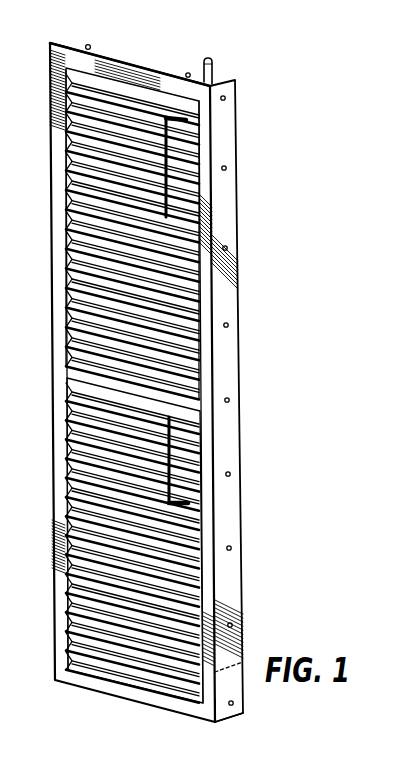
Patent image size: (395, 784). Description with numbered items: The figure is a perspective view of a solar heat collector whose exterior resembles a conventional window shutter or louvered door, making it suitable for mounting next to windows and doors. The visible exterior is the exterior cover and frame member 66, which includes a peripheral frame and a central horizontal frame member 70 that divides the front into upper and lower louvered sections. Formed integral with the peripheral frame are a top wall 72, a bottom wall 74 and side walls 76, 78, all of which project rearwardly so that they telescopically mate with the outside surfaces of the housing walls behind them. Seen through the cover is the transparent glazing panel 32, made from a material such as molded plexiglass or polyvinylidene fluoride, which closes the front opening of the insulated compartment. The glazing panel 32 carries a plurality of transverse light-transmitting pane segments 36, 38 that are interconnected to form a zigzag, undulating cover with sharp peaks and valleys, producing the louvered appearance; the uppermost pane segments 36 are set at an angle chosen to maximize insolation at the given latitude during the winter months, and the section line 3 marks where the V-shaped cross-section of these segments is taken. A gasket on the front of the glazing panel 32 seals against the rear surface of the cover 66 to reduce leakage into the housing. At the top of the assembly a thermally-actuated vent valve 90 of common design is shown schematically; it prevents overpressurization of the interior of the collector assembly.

The side wall 76 is at (62, 42).
The top wall 72 is at (106, 58).
The exterior cover and frame member 66 is at (147, 63).
The thermally-actuated vent valve 90 is at (213, 66).
The section line 3- 3 is at (186, 120).
The light-transmitting pane segment 36 is at (190, 240).
The light-transmitting pane segment 38 is at (218, 260).
The glazing panel 32 is at (168, 234).
The side wall 78 is at (232, 372).
The central horizontal frame member 70 is at (83, 370).
The bottom wall 74 is at (235, 715).